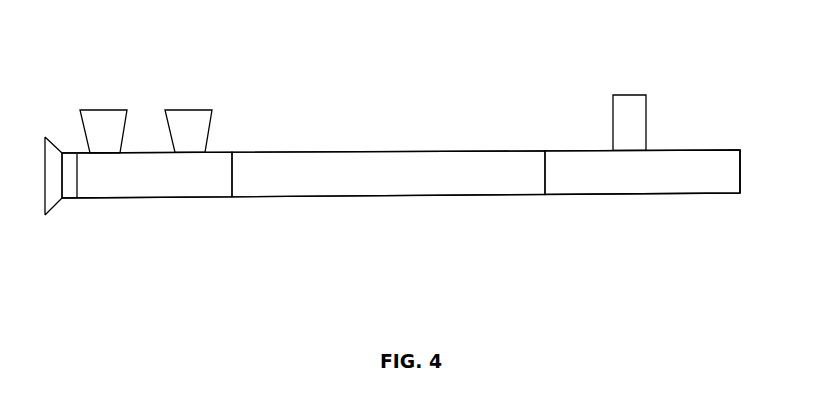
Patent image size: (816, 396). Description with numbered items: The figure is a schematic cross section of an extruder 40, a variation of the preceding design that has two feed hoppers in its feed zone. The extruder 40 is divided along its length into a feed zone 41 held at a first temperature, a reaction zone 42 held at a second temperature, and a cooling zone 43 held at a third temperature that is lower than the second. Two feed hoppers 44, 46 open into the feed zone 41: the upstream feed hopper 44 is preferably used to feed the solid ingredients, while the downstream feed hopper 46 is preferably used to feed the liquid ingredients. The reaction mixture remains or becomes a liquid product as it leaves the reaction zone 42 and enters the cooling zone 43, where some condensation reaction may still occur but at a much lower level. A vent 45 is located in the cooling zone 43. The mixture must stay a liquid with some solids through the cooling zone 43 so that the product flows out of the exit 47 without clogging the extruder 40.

The extruder 40 is at (405, 172).
The feed zone 41 is at (150, 197).
The reaction zone 42 is at (385, 193).
The cooling zone 43 is at (635, 188).
The upstream feed hopper 44 is at (103, 108).
The vent 45 is at (634, 97).
The downstream feed hopper 46 is at (198, 108).
The exit 47 is at (738, 170).